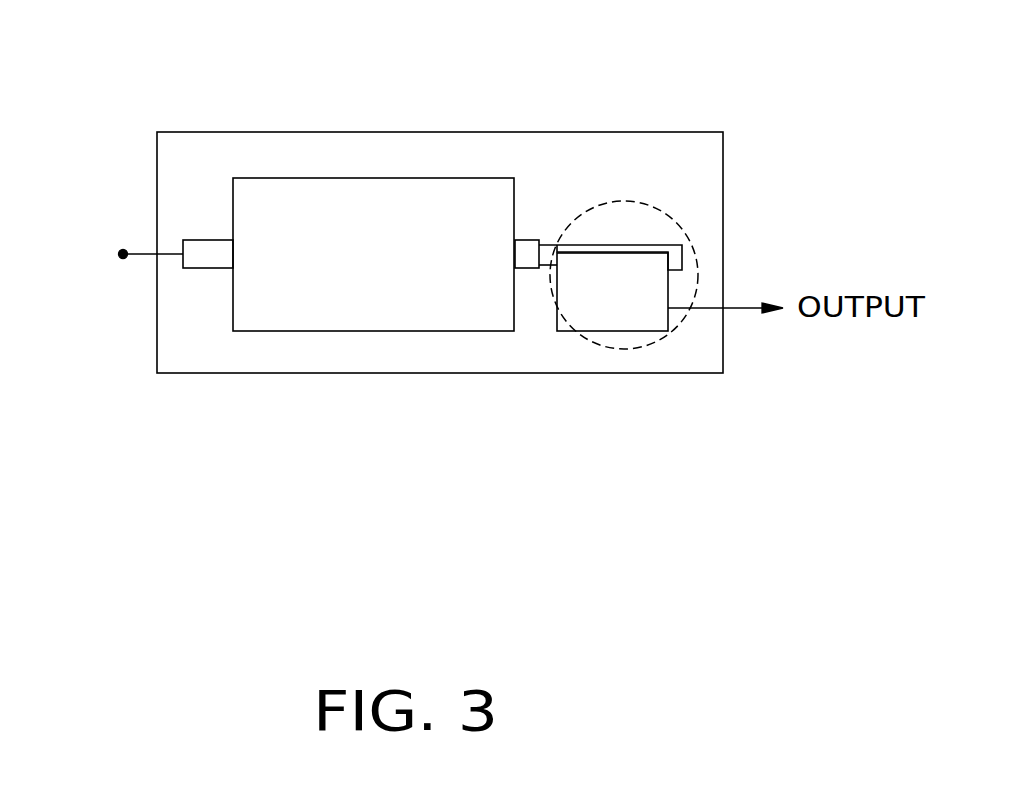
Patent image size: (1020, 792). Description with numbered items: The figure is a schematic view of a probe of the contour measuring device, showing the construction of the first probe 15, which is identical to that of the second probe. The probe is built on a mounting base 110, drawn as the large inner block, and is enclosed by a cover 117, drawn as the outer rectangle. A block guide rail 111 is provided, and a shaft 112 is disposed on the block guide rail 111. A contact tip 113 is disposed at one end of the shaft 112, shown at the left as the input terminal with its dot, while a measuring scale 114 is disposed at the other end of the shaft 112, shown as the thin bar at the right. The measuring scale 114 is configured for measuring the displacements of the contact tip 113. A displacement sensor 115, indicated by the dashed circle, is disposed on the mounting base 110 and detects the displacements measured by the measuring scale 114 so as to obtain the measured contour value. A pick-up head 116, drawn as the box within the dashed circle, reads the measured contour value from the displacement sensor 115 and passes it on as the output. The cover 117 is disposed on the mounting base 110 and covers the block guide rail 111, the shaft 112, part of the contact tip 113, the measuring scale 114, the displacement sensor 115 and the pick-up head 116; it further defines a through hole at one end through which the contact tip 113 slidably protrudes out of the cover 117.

The first probe 15 is at (355, 110).
The mounting base 110 is at (550, 353).
The block guide rail 111 is at (525, 257).
The shaft 112 is at (207, 258).
The contact tip 113 is at (138, 257).
The measuring scale 114 is at (678, 247).
The displacement sensor 115 is at (698, 273).
The pick-up head 116 is at (631, 307).
The cover 117 is at (277, 132).